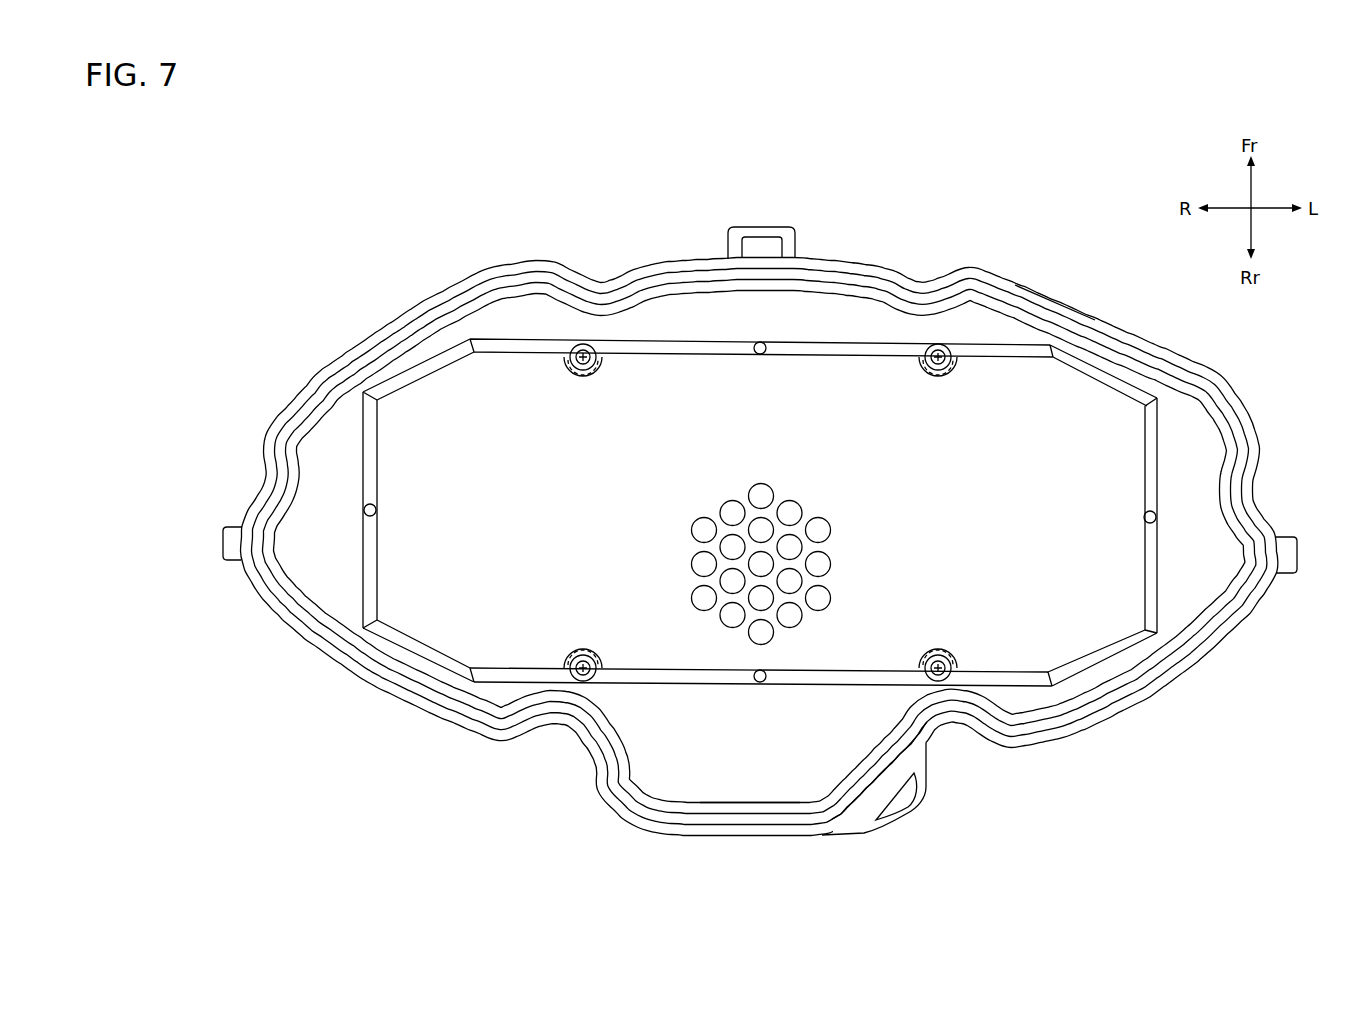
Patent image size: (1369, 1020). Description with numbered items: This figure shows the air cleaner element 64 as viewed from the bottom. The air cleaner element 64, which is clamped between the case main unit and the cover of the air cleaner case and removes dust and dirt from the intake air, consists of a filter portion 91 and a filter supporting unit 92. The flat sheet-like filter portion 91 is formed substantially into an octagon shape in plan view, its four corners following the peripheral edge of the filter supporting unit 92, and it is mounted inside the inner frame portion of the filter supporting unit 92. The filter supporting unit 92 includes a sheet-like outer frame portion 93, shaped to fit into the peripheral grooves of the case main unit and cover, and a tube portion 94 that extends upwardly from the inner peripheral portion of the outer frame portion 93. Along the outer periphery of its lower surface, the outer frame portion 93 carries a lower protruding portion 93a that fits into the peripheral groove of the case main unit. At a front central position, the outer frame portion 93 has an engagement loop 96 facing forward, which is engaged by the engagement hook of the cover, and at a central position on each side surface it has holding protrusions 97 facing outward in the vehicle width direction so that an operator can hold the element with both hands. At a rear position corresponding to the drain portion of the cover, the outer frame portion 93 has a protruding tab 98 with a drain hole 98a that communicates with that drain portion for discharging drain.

The air cleaner element 64 is at (757, 525).
The filter portion 91 is at (1080, 453).
The filter supporting unit 92 is at (390, 325).
The outer frame portion 93 is at (986, 277).
The lower protruding portion 93a is at (1058, 297).
The tube portion 94 is at (707, 757).
The engagement loop 96 is at (758, 232).
The holding protrusions 97 is at (229, 543).
The protruding tab 98 is at (927, 786).
The drain hole 98a is at (897, 798).